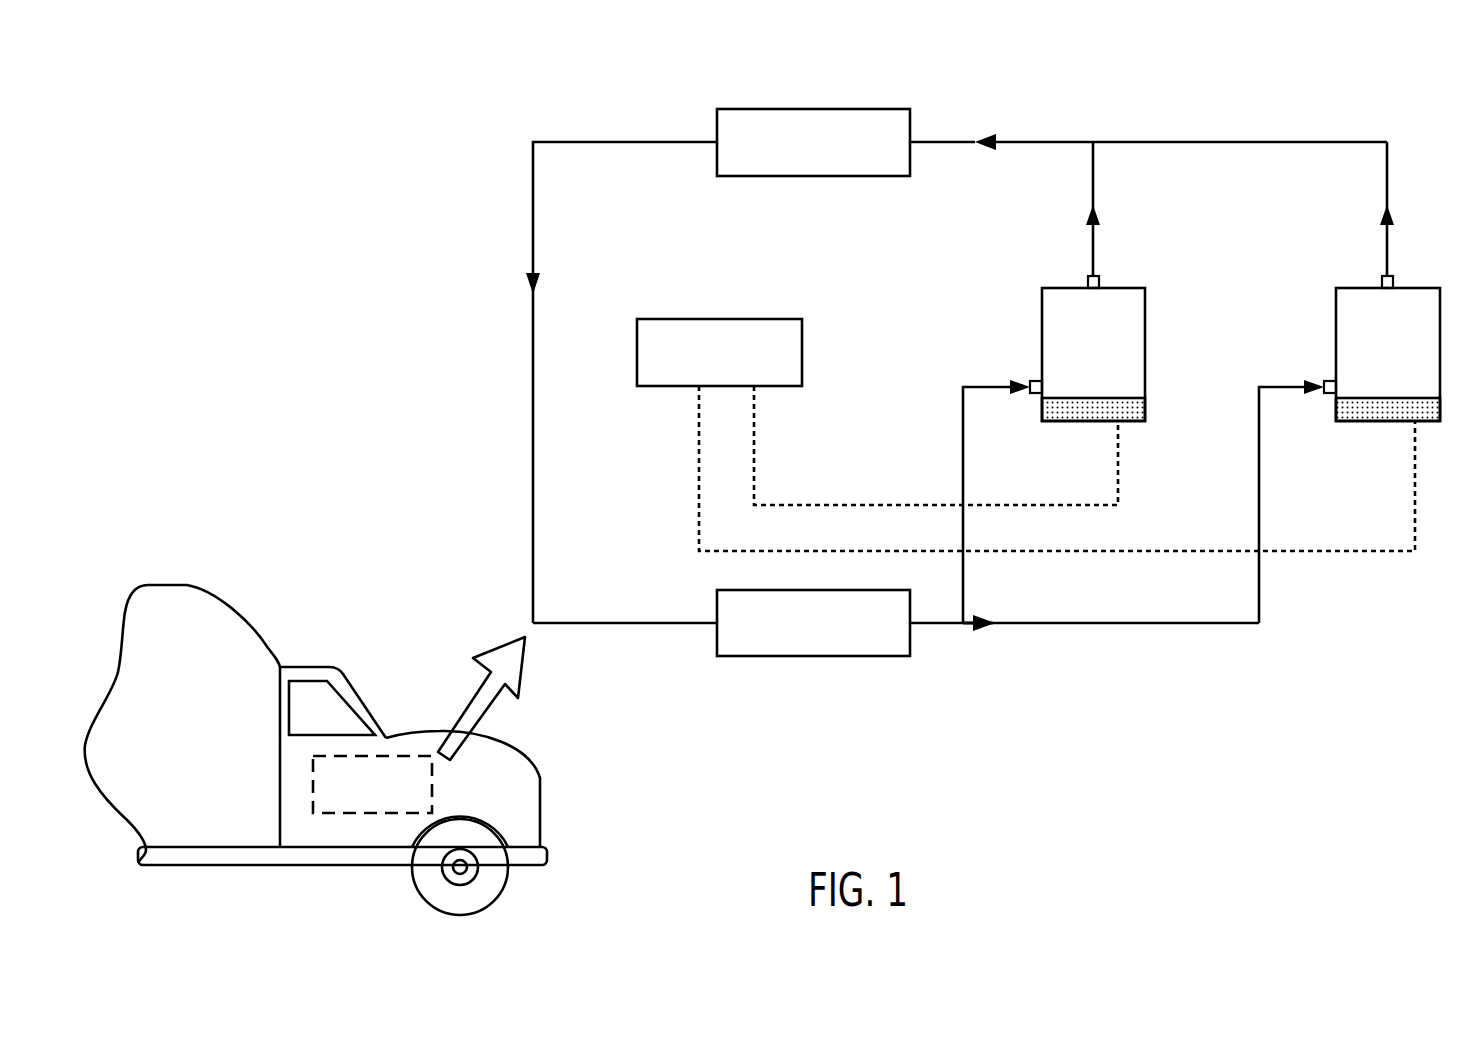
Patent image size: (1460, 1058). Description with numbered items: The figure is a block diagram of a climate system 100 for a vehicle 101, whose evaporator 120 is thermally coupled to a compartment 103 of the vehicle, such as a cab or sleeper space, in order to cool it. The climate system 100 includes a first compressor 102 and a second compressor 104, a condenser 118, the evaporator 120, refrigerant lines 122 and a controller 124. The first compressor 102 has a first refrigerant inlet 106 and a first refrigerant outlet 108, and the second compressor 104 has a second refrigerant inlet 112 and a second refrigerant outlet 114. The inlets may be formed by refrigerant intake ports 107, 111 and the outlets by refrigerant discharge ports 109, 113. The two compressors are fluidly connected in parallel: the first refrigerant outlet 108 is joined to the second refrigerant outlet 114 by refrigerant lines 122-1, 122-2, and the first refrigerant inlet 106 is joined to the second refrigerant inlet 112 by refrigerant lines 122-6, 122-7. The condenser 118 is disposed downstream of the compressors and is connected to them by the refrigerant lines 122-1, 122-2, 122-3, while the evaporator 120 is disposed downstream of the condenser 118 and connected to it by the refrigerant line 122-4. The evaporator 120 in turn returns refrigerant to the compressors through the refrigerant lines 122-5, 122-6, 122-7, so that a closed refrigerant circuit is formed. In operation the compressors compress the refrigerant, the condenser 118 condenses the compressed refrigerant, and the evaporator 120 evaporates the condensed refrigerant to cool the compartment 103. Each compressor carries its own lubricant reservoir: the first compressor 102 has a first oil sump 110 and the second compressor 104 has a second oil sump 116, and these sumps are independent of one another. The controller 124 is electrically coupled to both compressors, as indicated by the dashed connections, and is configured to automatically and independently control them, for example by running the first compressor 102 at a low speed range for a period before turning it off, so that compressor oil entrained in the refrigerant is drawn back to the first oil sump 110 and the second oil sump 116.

The climate system 100 is at (578, 53).
The vehicle 101 is at (253, 630).
The compartment 103 is at (388, 743).
The first compressor 102 is at (1115, 288).
The second compressor 104 is at (1412, 288).
The first refrigerant inlet 106 is at (963, 386).
The refrigerant intake port 107 is at (1033, 380).
The first refrigerant outlet 108 is at (1093, 248).
The refrigerant discharge port 109 is at (1089, 281).
The first oil sump 110 is at (1090, 406).
The refrigerant intake port 111 is at (1327, 380).
The second refrigerant inlet 112 is at (1259, 386).
The refrigerant discharge port 113 is at (1383, 281).
The second refrigerant outlet 114 is at (1387, 248).
The second oil sump 116 is at (1390, 406).
The condenser 118 is at (813, 142).
The evaporator 120 is at (813, 623).
The refrigerant lines 122 is at (956, 366).
The refrigerant line 122-1 is at (1094, 180).
The refrigerant line 122-2 is at (1268, 142).
The refrigerant line 122-3 is at (1055, 142).
The refrigerant line 122-4 is at (566, 143).
The refrigerant line 122-5 is at (940, 625).
The refrigerant line 122-6 is at (964, 589).
The refrigerant line 122-7 is at (1210, 625).
The controller 124 is at (1026, 435).